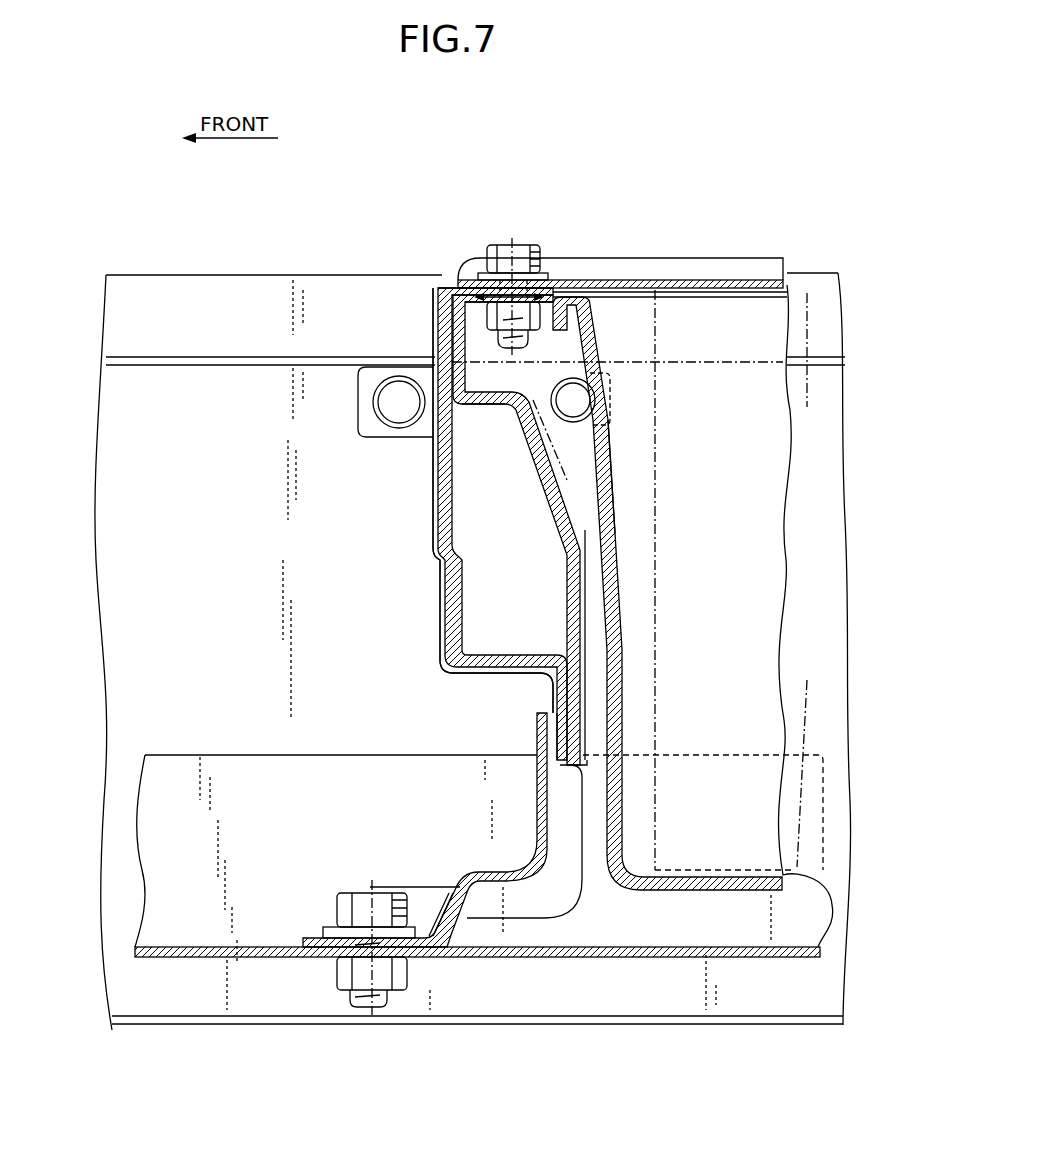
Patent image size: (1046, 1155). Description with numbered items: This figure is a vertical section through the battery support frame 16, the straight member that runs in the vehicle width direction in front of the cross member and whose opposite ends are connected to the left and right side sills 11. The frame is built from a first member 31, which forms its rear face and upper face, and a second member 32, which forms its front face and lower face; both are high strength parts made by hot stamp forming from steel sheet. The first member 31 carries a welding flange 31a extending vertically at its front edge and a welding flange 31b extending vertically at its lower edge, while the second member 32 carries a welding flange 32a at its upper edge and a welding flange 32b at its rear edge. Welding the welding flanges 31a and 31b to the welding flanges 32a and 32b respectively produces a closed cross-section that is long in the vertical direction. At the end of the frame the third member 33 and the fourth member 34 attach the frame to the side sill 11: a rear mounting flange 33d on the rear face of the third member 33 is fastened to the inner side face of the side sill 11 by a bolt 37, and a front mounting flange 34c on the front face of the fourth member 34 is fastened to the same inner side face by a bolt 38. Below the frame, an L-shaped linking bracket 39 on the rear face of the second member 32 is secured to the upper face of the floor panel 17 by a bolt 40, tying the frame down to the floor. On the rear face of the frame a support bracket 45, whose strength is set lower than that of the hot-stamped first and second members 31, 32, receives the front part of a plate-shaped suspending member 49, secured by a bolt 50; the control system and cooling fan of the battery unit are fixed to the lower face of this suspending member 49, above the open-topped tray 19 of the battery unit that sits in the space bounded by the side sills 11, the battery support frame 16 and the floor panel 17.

The side sill 11 is at (117, 498).
The battery support frame 16 is at (410, 485).
The floor panel 17 is at (267, 965).
The tray 19 is at (603, 292).
The first member 31 is at (556, 550).
The welding flange 31a is at (457, 277).
The welding flange 31b is at (583, 724).
The second member 32 is at (466, 588).
The welding flange 32a is at (445, 277).
The welding flange 32b is at (552, 733).
The third member 33 is at (596, 536).
The rear mounting flange 33d is at (612, 450).
The fourth member 34 is at (432, 572).
The front mounting flange 34c is at (373, 373).
The bolt 37 is at (575, 405).
The bolt 38 is at (396, 403).
The linking bracket 39 is at (536, 830).
The bolt 40 is at (372, 893).
The support bracket 45 is at (480, 405).
The suspending member 49 is at (673, 280).
The bolt 50 is at (510, 255).